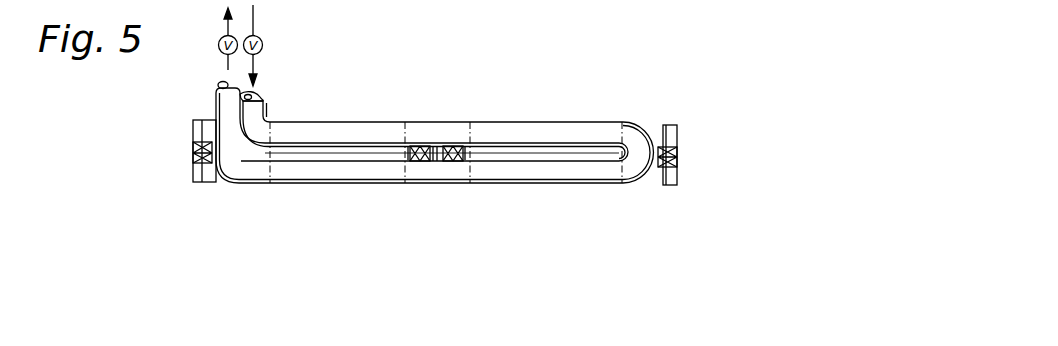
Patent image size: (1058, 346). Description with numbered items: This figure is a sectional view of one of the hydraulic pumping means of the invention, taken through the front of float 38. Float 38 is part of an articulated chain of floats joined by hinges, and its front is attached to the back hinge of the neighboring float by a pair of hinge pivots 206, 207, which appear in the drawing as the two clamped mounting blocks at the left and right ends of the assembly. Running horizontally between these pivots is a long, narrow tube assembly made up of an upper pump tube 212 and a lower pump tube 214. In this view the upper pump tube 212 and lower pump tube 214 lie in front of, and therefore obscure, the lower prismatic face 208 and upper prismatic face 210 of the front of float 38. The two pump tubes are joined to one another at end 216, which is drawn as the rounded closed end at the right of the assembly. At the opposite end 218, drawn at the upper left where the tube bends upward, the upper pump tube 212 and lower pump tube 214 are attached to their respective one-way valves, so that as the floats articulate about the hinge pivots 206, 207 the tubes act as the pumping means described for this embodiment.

The hinge pivot 207 is at (193, 152).
The end 218 is at (272, 98).
The upper prismatic face 210 is at (372, 122).
The upper pump tube 212 is at (500, 126).
The float 38 is at (665, 125).
The hinge pivot 206 is at (677, 155).
The end 216 is at (640, 157).
The lower prismatic face 208 is at (372, 187).
The lower pump tube 214 is at (498, 185).